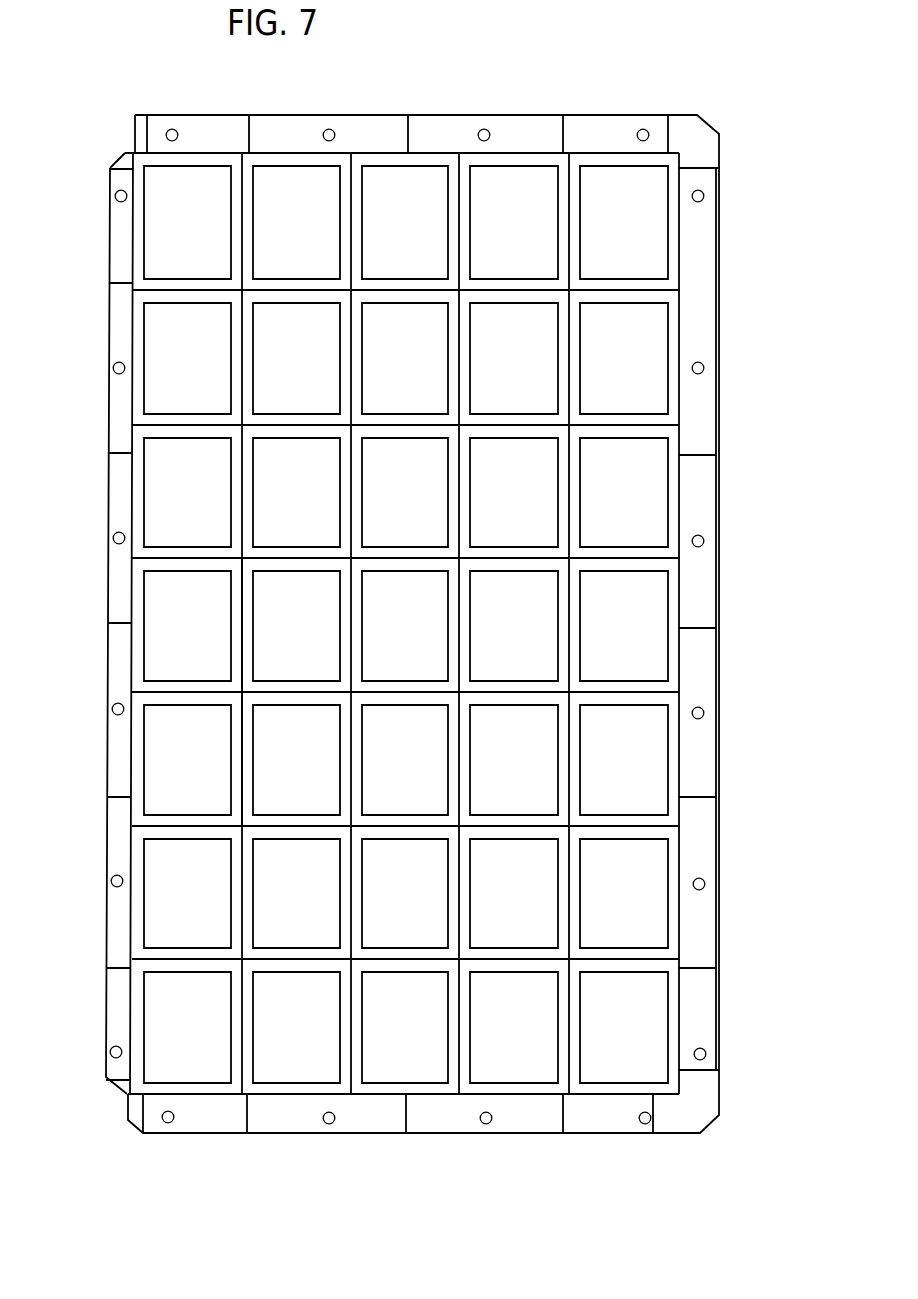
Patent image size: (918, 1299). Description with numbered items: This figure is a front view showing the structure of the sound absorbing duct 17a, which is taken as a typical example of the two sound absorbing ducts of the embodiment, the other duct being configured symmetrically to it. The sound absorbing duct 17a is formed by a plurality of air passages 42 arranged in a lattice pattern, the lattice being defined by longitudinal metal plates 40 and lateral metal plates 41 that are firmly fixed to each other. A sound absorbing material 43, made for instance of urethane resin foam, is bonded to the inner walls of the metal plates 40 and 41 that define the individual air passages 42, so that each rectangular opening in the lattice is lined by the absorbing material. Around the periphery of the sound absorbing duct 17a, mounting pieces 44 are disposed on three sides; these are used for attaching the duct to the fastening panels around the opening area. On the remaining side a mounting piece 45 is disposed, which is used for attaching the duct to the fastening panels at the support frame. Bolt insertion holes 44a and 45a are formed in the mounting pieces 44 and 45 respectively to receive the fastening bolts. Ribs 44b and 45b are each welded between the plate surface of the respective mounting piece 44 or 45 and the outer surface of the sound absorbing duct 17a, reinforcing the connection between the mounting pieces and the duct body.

The sound absorbing duct 17a is at (112, 144).
The longitudinal metal plate 40 is at (348, 883).
The lateral metal plate 41 is at (298, 694).
The air passage 42 is at (419, 505).
The sound absorbing material 43 is at (247, 621).
The mounting piece 44 is at (627, 123).
The bolt insertion hole 44a is at (331, 129).
The rib 44b is at (410, 133).
The mounting piece 45 is at (110, 990).
The bolt insertion hole 45a is at (114, 886).
The rib 45b is at (120, 797).